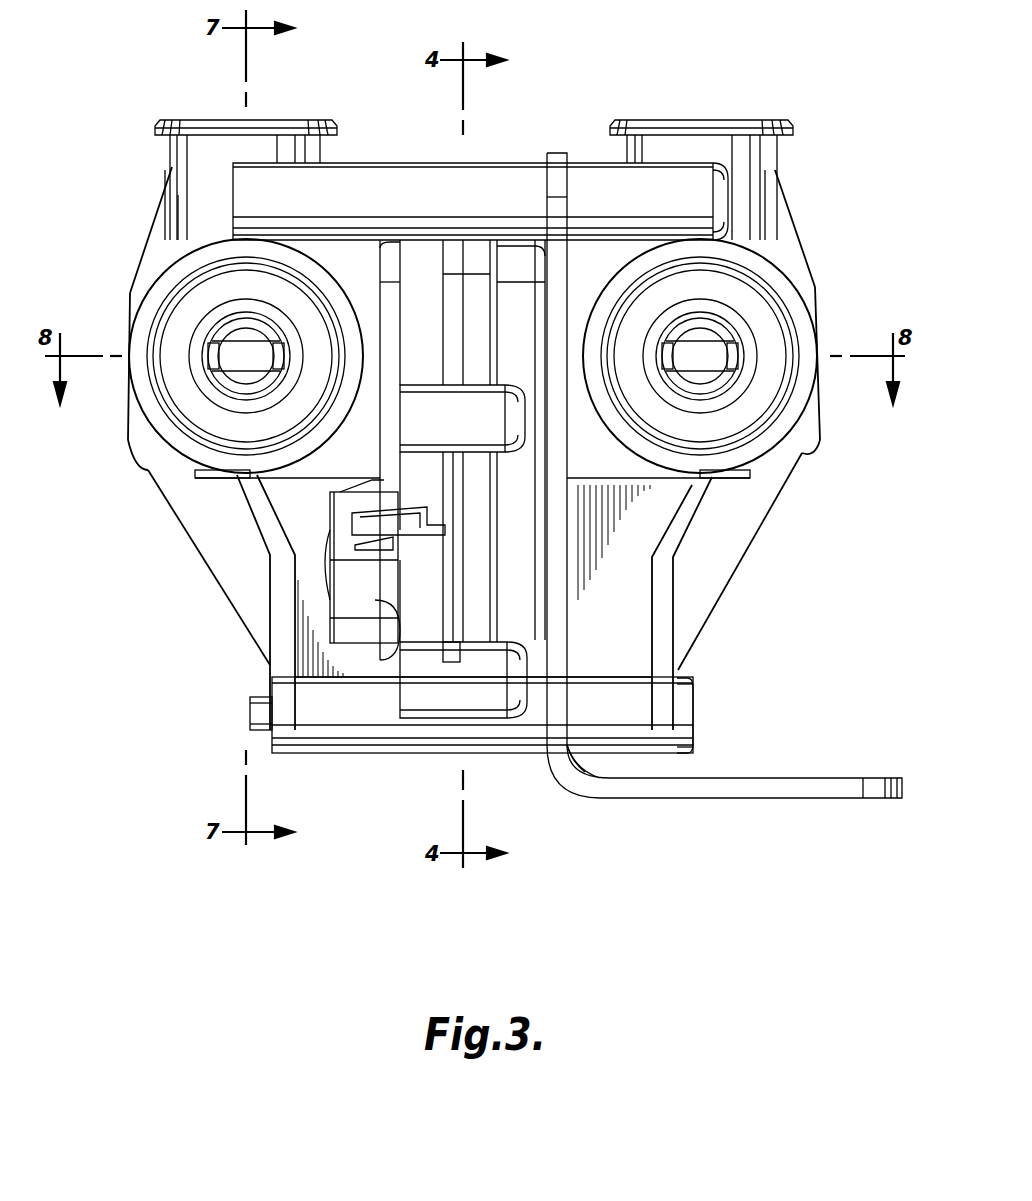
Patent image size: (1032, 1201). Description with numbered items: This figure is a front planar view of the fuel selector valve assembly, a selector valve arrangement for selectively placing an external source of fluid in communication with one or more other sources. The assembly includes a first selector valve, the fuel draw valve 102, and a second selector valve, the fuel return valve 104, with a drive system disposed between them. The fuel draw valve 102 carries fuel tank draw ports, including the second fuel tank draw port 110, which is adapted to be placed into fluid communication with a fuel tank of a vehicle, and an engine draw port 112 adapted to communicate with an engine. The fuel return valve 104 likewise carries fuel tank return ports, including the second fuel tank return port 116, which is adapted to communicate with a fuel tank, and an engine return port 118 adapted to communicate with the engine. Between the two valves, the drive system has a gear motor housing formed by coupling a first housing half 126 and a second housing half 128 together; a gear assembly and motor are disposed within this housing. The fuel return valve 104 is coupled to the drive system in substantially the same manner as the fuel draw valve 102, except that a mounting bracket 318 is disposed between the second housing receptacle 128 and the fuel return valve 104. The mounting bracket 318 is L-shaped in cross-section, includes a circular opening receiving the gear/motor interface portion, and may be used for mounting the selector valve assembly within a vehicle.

The fuel draw valve 102 is at (222, 632).
The fuel return valve 104 is at (785, 522).
The second fuel tank draw port 110 is at (158, 450).
The engine draw port 112 is at (222, 105).
The second fuel tank return port 116 is at (796, 448).
The engine return port 118 is at (718, 106).
The first housing half 126 is at (425, 300).
The second housing half 128 is at (520, 290).
The mounting bracket 318 is at (740, 797).